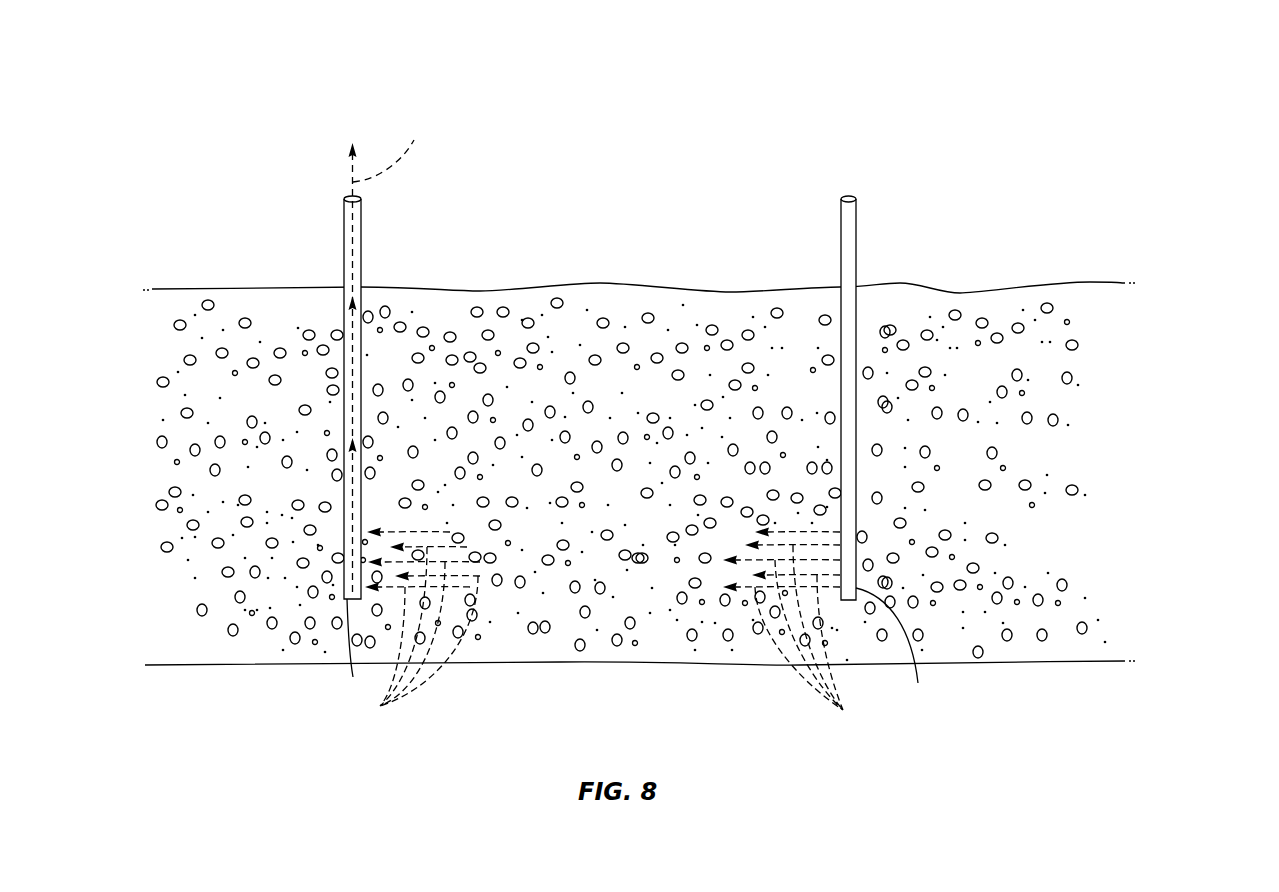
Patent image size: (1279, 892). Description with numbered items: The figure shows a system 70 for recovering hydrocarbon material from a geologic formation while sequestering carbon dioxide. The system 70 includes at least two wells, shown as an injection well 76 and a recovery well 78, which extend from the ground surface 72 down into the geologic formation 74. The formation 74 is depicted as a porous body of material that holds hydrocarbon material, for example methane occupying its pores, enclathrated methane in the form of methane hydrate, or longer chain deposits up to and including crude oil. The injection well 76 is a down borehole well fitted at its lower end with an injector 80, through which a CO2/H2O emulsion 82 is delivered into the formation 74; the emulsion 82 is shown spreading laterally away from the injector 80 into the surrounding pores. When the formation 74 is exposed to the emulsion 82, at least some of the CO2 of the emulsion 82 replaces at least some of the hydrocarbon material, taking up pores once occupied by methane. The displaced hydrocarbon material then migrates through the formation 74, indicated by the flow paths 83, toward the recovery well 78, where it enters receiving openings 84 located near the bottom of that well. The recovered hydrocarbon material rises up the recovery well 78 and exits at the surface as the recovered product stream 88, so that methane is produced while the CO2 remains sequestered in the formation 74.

The system 70 is at (1137, 113).
The ground surface / soil region 72 is at (600, 284).
The geologic formation 74 is at (307, 330).
The injection well 76 is at (858, 232).
The recovery well 78 is at (344, 233).
The injector 80 is at (897, 650).
The CO2/H2O emulsion 82 is at (843, 710).
The fluid flow paths toward extraction pipe 83 is at (380, 706).
The receiving openings 84 is at (362, 650).
The extracted vapor flow 88 is at (397, 147).